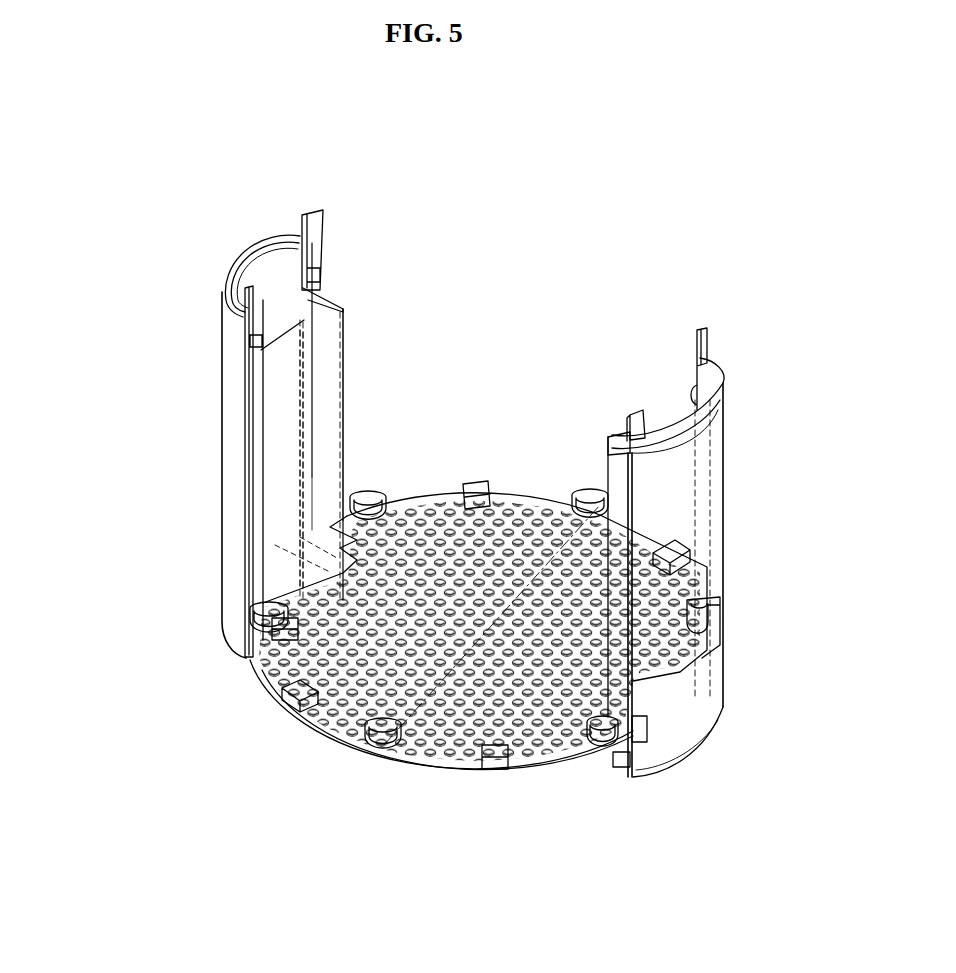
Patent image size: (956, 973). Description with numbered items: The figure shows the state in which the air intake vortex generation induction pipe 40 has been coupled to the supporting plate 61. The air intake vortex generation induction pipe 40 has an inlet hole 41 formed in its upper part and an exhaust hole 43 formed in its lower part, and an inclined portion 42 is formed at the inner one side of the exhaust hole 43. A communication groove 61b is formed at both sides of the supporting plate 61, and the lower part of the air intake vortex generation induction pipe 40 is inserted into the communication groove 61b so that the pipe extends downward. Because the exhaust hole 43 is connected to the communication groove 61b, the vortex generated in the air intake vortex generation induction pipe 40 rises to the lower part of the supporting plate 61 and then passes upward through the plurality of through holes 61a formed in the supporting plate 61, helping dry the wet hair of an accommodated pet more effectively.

The air intake vortex generation induction pipe 40 is at (227, 387).
The inlet hole 41 is at (264, 268).
The inclined portion 42 is at (283, 548).
The exhaust hole 43 is at (315, 500).
The supporting plate 61 is at (328, 742).
The through holes 61a is at (463, 554).
The communication groove 61b is at (252, 585).